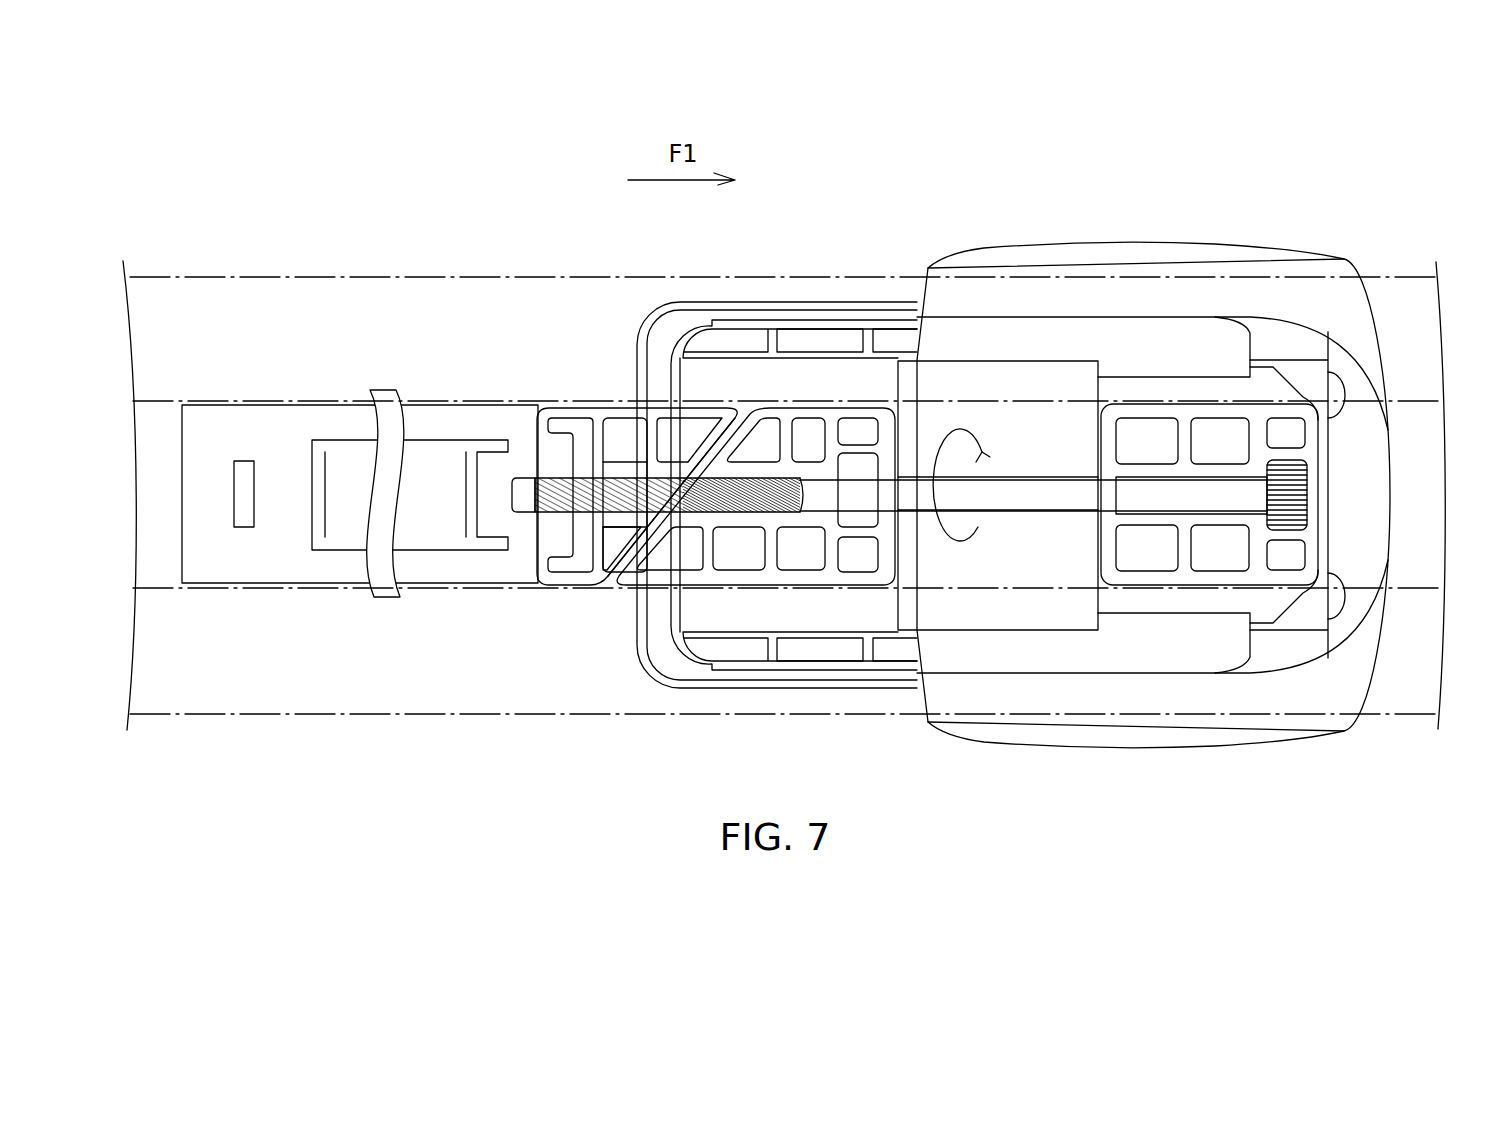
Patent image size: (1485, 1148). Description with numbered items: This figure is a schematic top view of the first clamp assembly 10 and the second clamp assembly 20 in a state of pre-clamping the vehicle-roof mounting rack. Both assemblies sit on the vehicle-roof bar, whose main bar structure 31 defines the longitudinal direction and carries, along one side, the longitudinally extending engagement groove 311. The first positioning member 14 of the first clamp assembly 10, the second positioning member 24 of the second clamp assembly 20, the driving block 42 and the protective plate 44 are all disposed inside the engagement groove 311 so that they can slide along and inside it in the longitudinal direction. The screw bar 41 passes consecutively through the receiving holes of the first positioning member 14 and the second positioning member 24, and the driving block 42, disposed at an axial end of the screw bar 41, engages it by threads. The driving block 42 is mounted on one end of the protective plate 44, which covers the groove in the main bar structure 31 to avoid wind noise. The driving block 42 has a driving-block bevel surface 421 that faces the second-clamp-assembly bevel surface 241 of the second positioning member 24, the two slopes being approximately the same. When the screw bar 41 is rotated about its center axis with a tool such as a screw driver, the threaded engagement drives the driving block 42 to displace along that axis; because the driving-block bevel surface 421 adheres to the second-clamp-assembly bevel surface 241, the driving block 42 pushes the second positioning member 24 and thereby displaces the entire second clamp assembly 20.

The first clamp assembly 10 is at (1108, 235).
The first positioning member 14 is at (1184, 413).
The second clamp assembly 20 is at (727, 288).
The second positioning member 24 is at (773, 573).
The second-clamp-assembly bevel surface 241 is at (740, 447).
The main bar structure 31 is at (1411, 268).
The engagement groove 311 is at (1408, 540).
The screw bar 41 is at (1052, 495).
The driving block 42 is at (597, 416).
The driving-block bevel surface 421 is at (700, 453).
The protective plate 44 is at (285, 425).